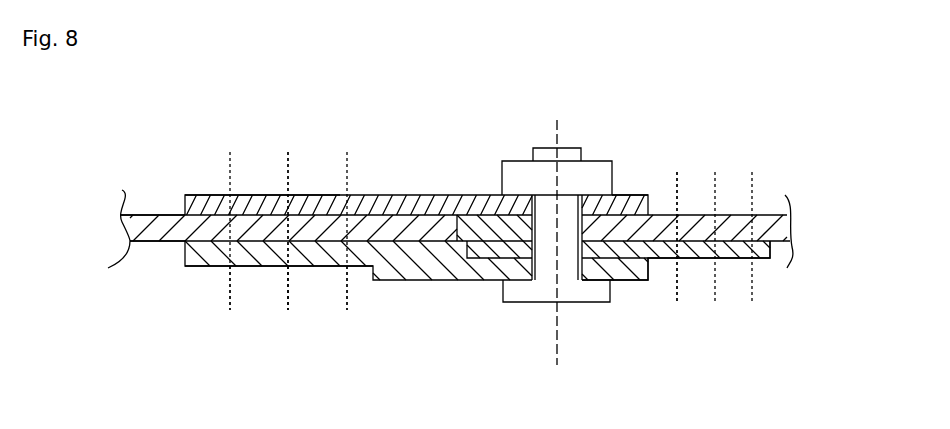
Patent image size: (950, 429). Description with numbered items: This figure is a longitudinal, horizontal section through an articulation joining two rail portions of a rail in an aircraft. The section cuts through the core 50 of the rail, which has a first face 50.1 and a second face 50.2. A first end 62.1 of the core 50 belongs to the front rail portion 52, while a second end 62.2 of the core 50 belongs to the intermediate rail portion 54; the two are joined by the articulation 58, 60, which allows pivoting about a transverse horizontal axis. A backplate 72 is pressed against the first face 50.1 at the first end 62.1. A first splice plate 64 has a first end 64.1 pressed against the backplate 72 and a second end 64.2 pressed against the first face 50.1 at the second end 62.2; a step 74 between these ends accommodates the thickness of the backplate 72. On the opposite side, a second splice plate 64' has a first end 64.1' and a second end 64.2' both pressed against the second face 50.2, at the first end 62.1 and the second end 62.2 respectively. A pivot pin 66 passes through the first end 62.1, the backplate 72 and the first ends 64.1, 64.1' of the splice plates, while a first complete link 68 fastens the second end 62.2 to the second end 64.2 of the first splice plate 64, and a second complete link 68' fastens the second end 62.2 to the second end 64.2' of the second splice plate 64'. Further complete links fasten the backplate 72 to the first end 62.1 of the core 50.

The core 50 is at (152, 212).
The first face of the core 50.1 is at (150, 245).
The second face of the core 50.2 is at (122, 190).
The front rail portion 52 is at (470, 318).
The intermediate rail portion 54 is at (423, 312).
The front articulation 58 is at (490, 178).
The rear articulation 60 is at (527, 232).
The first end of the core 62.1 is at (650, 215).
The second end of the core 62.2 is at (330, 230).
The first splice plate 64 is at (477, 302).
The second splice plate 64' is at (416, 168).
The first end of the first splice plate 64.1 is at (646, 291).
The second end of the first splice plate 64.2 is at (252, 281).
The first end of the second splice plate 64.1' is at (575, 159).
The second end of the second splice plate 64.2' is at (250, 159).
The pivot pin 66 is at (533, 303).
The first complete link 68 is at (288, 316).
The second complete link 68' is at (288, 207).
The backplate 72 is at (730, 255).
The step 74 is at (438, 238).